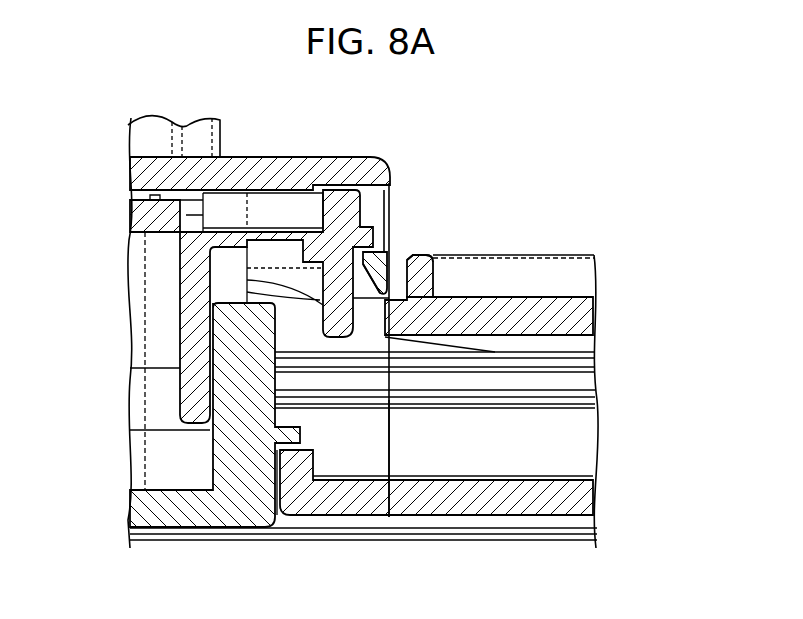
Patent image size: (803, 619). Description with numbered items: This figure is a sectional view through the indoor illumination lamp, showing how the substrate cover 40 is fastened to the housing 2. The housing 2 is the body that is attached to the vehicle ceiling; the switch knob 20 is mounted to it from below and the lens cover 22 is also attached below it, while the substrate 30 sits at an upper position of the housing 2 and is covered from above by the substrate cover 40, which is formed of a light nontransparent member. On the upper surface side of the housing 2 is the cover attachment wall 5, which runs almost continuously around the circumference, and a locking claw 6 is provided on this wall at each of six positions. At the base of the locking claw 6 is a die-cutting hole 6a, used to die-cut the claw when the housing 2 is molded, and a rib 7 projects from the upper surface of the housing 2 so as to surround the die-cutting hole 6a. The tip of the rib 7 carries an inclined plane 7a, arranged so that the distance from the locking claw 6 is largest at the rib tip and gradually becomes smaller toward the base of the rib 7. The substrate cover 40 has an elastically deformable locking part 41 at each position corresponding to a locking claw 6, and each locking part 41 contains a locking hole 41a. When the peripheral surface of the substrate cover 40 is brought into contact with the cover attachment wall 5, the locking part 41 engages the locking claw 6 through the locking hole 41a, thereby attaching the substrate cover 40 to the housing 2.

The housing 2 is at (532, 305).
The cover attachment wall 5 is at (343, 185).
The locking claw 6 is at (389, 184).
The die-cutting hole 6a is at (386, 517).
The rib 7 is at (433, 283).
The inclined plane 7a is at (433, 260).
The switch knob 20 is at (228, 500).
The lens cover 22 is at (505, 500).
The substrate 30 is at (128, 222).
The substrate cover 40 is at (262, 157).
The locking part 41 is at (395, 270).
The locking hole 41a is at (373, 280).